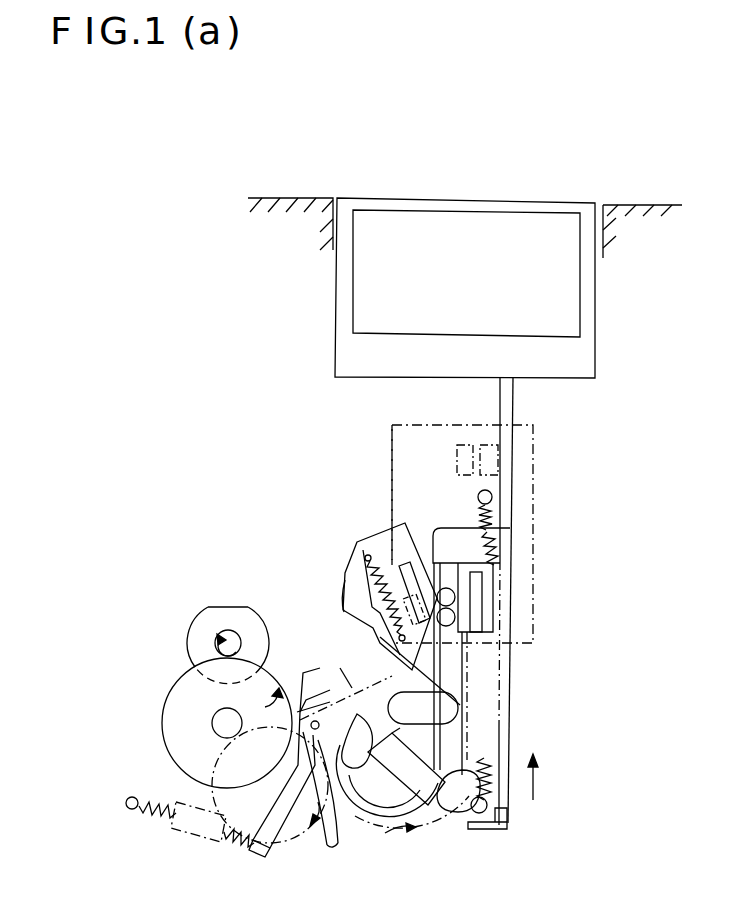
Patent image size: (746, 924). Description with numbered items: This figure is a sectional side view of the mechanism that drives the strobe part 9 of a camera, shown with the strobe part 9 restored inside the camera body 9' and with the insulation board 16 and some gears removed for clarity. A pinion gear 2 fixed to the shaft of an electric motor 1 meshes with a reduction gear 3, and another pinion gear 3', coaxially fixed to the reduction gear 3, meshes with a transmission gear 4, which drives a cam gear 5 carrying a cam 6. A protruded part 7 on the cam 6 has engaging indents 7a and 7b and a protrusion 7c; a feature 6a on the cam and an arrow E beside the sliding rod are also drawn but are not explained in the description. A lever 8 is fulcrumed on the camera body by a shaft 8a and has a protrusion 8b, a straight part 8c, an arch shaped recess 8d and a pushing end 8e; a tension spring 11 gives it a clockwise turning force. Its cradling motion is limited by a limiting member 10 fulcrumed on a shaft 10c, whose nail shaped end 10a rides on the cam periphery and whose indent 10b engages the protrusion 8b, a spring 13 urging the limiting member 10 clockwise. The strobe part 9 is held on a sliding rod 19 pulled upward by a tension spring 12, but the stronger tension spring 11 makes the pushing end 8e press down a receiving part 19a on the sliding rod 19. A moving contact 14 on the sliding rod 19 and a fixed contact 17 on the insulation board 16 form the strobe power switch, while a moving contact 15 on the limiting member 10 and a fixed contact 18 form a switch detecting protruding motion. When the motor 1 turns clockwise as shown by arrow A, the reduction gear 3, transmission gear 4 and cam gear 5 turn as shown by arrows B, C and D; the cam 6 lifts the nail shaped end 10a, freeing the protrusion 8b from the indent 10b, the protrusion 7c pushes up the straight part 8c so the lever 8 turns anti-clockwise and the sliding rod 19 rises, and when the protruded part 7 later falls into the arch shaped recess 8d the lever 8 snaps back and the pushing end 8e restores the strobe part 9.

The electric motor 1 is at (212, 606).
The pinion gear 2 is at (232, 630).
The reduction gear 3 is at (217, 723).
The pinion gear 3' is at (183, 724).
The transmission gear 4 is at (292, 843).
The cam gear 5 is at (362, 822).
The cam 6 is at (430, 815).
The link end 6a is at (409, 745).
The protruded part 7 is at (352, 790).
The engaging indent 7a is at (348, 700).
The engaging indent 7b is at (348, 686).
The protrusion 7c is at (326, 822).
The lever 8 is at (304, 712).
The shaft 8a is at (302, 708).
The protrusion 8b is at (332, 688).
The straight part 8c is at (408, 772).
The arch shaped recess 8d is at (297, 712).
The pushing end 8e is at (470, 822).
The strobe part 9 is at (487, 288).
The camera body 9' is at (465, 198).
The limiting member 10 is at (362, 541).
The nail shaped end 10a is at (423, 708).
The indent 10b is at (344, 612).
The shaft 10c is at (345, 572).
The tension spring 11 is at (205, 842).
The tension spring 12 is at (499, 727).
The spring 13 is at (356, 550).
The moving contact 14 is at (493, 598).
The moving contact 15 is at (393, 537).
The insulation board 16 is at (533, 478).
The fixed contact 17 is at (500, 448).
The fixed contact 18 is at (440, 626).
The sliding rod 19 is at (508, 678).
The receiving part 19a is at (508, 826).
The arrow A is at (214, 637).
The arrow B is at (266, 703).
The arrow C is at (311, 801).
The arrow D is at (403, 848).
The movement direction E is at (538, 778).